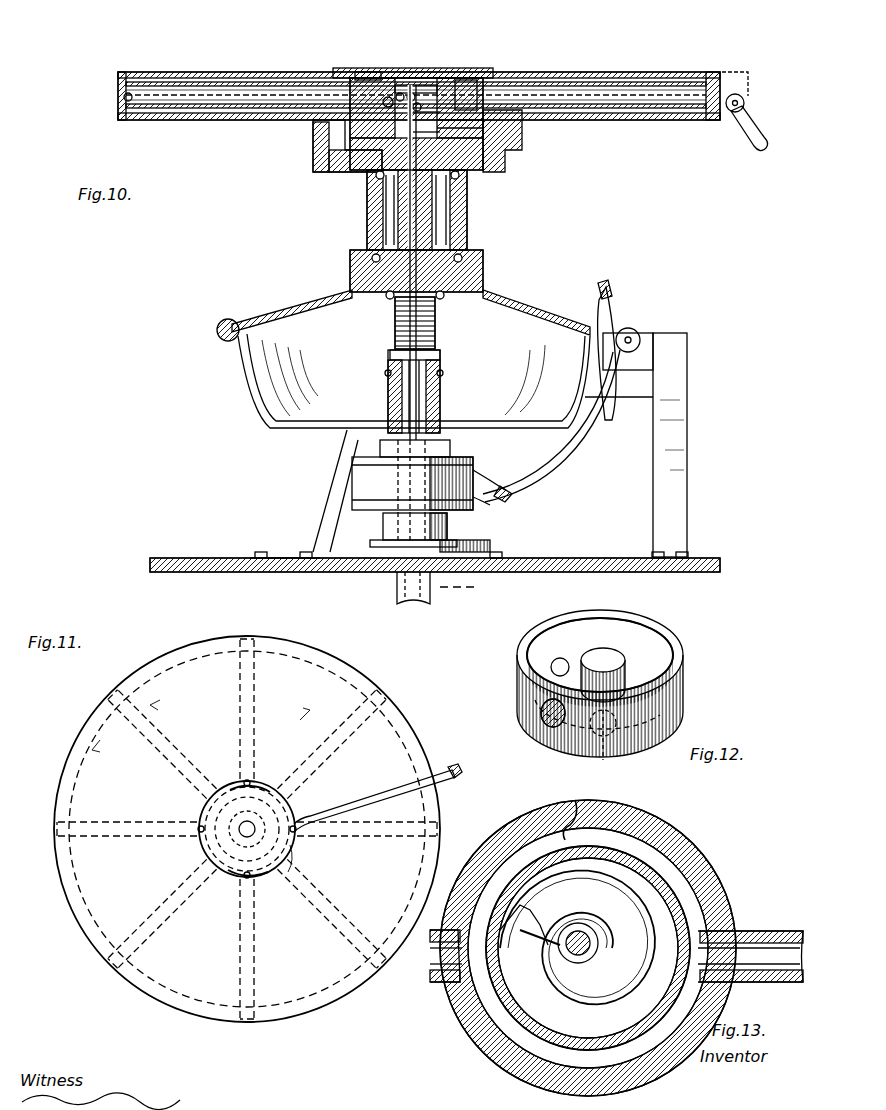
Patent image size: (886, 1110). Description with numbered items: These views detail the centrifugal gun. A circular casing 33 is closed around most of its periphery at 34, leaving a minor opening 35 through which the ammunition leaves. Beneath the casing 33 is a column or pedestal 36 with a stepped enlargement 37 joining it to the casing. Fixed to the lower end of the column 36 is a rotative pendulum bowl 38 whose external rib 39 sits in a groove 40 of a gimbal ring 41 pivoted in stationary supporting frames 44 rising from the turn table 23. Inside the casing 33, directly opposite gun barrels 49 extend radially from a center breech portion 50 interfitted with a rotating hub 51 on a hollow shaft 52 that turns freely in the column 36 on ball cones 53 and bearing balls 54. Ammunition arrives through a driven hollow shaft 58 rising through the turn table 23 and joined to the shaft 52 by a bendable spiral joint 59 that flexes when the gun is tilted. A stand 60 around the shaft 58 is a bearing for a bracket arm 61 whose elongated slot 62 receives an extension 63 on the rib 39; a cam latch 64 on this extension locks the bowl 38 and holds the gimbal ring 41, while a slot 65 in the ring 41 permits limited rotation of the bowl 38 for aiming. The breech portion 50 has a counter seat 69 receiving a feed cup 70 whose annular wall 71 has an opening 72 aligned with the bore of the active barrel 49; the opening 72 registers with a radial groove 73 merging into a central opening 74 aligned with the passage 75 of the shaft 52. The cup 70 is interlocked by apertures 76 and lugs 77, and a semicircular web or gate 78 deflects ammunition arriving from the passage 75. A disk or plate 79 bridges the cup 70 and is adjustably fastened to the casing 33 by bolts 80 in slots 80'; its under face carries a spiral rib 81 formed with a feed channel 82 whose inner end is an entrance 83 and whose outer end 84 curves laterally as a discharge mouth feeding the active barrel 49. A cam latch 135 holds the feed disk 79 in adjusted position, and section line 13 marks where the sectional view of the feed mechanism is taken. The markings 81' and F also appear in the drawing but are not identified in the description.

In FIG. 10, the section line 13 is at (329, 54).
In FIG. 10, the turn table 23 is at (215, 549).
In FIG. 10, the circular casing 33 is at (604, 112).
In FIG. 11, the circular casing 33 is at (326, 672).
In FIG. 10, the closed peripheral portion 34 is at (706, 118).
In FIG. 11, the closed peripheral portion 34 is at (314, 648).
In FIG. 10, the minor opening 35 is at (122, 100).
In FIG. 11, the minor opening 35 is at (54, 805).
In FIG. 10, the column or pedestal 36 is at (368, 225).
In FIG. 10, the enlargement 37 is at (360, 150).
In FIG. 10, the rotative pendulum bowl 38 is at (538, 305).
In FIG. 10, the external rib 39 is at (232, 340).
In FIG. 10, the channel or groove 40 is at (226, 320).
In FIG. 10, the gimbal ring 41 is at (218, 330).
In FIG. 10, the stationary supporting frames 44 is at (686, 395).
In FIG. 10, the gun barrels 49 is at (240, 82).
In FIG. 11, the gun barrels 49 is at (400, 826).
In FIG. 13, the gun barrels 49 is at (770, 931).
In FIG. 10, the center breech portion 50 is at (313, 125).
In FIG. 13, the center breech portion 50 is at (660, 844).
In FIG. 10, the rotating hub 51 is at (330, 150).
In FIG. 10, the hollow shaft 52 is at (432, 242).
In FIG. 10, the ball cones 53 is at (375, 178).
In FIG. 10, the bearing balls 54 is at (497, 165).
In FIG. 10, the driven hollow shaft 58 is at (397, 588).
In FIG. 10, the flexible spiral joint 59 is at (438, 320).
In FIG. 10, the stand 60 is at (355, 503).
In FIG. 10, the bracket arm 61 is at (555, 468).
In FIG. 10, the elongated slot 62 is at (580, 432).
In FIG. 10, the extension 63 is at (610, 300).
In FIG. 10, the cam latch 64 is at (636, 330).
In FIG. 10, the slot 65 is at (606, 283).
In FIG. 10, the counter seat 69 is at (522, 135).
In FIG. 10, the feed or breech cup 70 is at (462, 78).
In FIG. 12, the feed or breech cup 70 is at (683, 672).
In FIG. 13, the feed or breech cup 70 is at (578, 802).
In FIG. 10, the vertical annular wall 71 is at (470, 112).
In FIG. 12, the vertical annular wall 71 is at (670, 640).
In FIG. 10, the opening 72 is at (390, 96).
In FIG. 12, the opening 72 is at (548, 726).
In FIG. 13, the opening 72 is at (470, 960).
In FIG. 10, the radial groove 73 is at (362, 100).
In FIG. 12, the radial groove 73 is at (552, 665).
In FIG. 10, the opening 74 is at (445, 78).
In FIG. 12, the opening 74 is at (612, 760).
In FIG. 10, the passage 75 is at (418, 218).
In FIG. 10, the apertures 76 is at (470, 80).
In FIG. 12, the apertures 76 is at (575, 640).
In FIG. 10, the lugs 77 is at (380, 160).
In FIG. 10, the semi-circular web or gate 78 is at (412, 92).
In FIG. 12, the semi-circular web or gate 78 is at (612, 652).
In FIG. 13, the semi-circular web or gate 78 is at (582, 960).
In FIG. 10, the disk or circular plate 79 is at (428, 85).
In FIG. 11, the disk or circular plate 79 is at (272, 790).
In FIG. 13, the disk or circular plate 79 is at (604, 858).
In FIG. 10, the bolts 80 is at (366, 58).
In FIG. 11, the bolts 80 is at (220, 808).
In FIG. 11, the slots 80' is at (323, 861).
In FIG. 10, the convolute rib or web 81 is at (479, 77).
In FIG. 11, the convolute rib or web 81 is at (232, 894).
In FIG. 13, the convolute rib or web 81 is at (733, 865).
In FIG. 13, the spring end 81' is at (549, 939).
In FIG. 10, the feed groove or channel 82 is at (402, 80).
In FIG. 11, the feed groove or channel 82 is at (290, 816).
In FIG. 13, the feed groove or channel 82 is at (662, 870).
In FIG. 13, the entrance 83 is at (490, 840).
In FIG. 13, the outer end 84 is at (500, 960).
In FIG. 10, the cam latch 135 is at (751, 120).
In FIG. 11, the cam latch 135 is at (466, 770).
In FIG. 10, the frame F is at (370, 198).